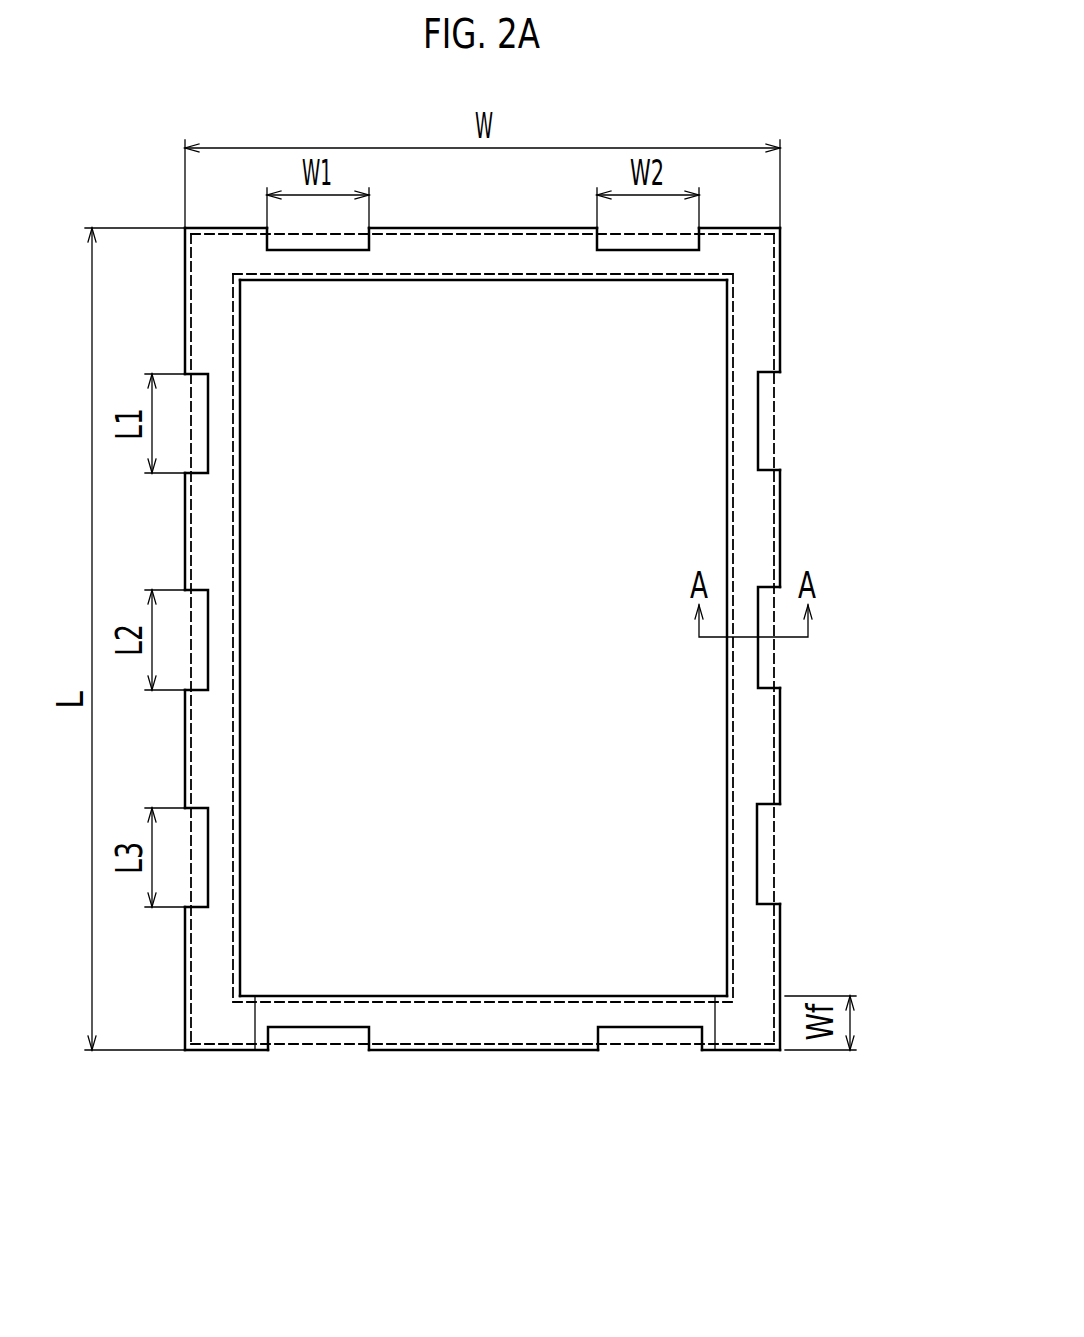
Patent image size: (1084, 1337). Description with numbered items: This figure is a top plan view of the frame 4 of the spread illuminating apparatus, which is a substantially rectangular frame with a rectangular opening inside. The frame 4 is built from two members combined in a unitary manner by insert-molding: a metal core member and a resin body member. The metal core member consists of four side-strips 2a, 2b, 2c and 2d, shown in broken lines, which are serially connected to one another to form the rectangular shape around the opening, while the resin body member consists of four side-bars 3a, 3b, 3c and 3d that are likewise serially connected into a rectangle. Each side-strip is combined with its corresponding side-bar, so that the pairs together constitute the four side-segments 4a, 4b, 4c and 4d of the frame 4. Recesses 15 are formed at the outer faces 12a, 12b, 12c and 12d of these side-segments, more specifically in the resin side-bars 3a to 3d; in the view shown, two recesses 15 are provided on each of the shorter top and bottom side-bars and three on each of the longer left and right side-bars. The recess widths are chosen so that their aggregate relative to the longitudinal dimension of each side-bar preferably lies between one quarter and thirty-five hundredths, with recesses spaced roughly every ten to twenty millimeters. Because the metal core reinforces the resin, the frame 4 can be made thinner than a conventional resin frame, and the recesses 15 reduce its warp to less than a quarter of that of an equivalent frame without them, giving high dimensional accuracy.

The frame 4 is at (752, 1063).
The side-segment 4a is at (587, 1112).
The side-segment 4b is at (850, 460).
The side-segment 4c is at (187, 1113).
The side-segment 4d is at (850, 128).
The side-strip 2a is at (493, 1030).
The side-strip 2b is at (762, 545).
The side-strip 2c is at (203, 972).
The side-strip 2d is at (722, 248).
The side-bar 3a is at (555, 1052).
The side-bar 3b is at (782, 497).
The side-bar 3c is at (185, 1013).
The side-bar 3d is at (753, 230).
The outer face 12a is at (408, 1052).
The outer face 12b is at (782, 722).
The outer face 12c is at (185, 510).
The outer face 12d is at (480, 230).
The recess 15 is at (368, 245).